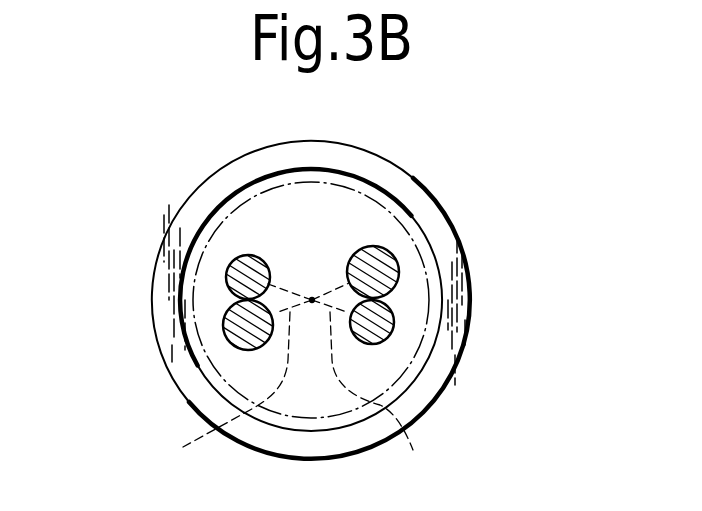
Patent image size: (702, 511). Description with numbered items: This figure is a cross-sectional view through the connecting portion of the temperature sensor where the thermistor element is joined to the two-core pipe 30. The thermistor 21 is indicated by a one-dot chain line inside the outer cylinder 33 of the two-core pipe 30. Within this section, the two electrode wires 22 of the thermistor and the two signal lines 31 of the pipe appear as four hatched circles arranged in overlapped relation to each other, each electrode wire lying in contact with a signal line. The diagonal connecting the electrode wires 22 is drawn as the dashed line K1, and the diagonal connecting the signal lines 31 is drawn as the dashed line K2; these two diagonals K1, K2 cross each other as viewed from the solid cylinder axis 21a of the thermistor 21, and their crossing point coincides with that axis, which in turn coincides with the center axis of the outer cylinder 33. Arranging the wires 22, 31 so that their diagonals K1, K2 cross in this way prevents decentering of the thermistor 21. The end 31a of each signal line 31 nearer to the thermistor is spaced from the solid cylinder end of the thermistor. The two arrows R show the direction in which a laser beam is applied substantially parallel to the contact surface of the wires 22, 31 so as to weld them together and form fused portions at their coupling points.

The two-core pipe 30 is at (438, 397).
The thermistor 21 is at (405, 183).
The outer cylinder 33 is at (460, 258).
The electrode wires 22 is at (232, 265).
The signal lines 31 is at (235, 350).
The solid cylinder axis 21a is at (312, 300).
The end of signal line 31a is at (308, 297).
The diagonal connecting the electrode wires K1 is at (381, 398).
The diagonal connecting the signal lines K2 is at (225, 398).
The direction of laser beam application R is at (121, 305).